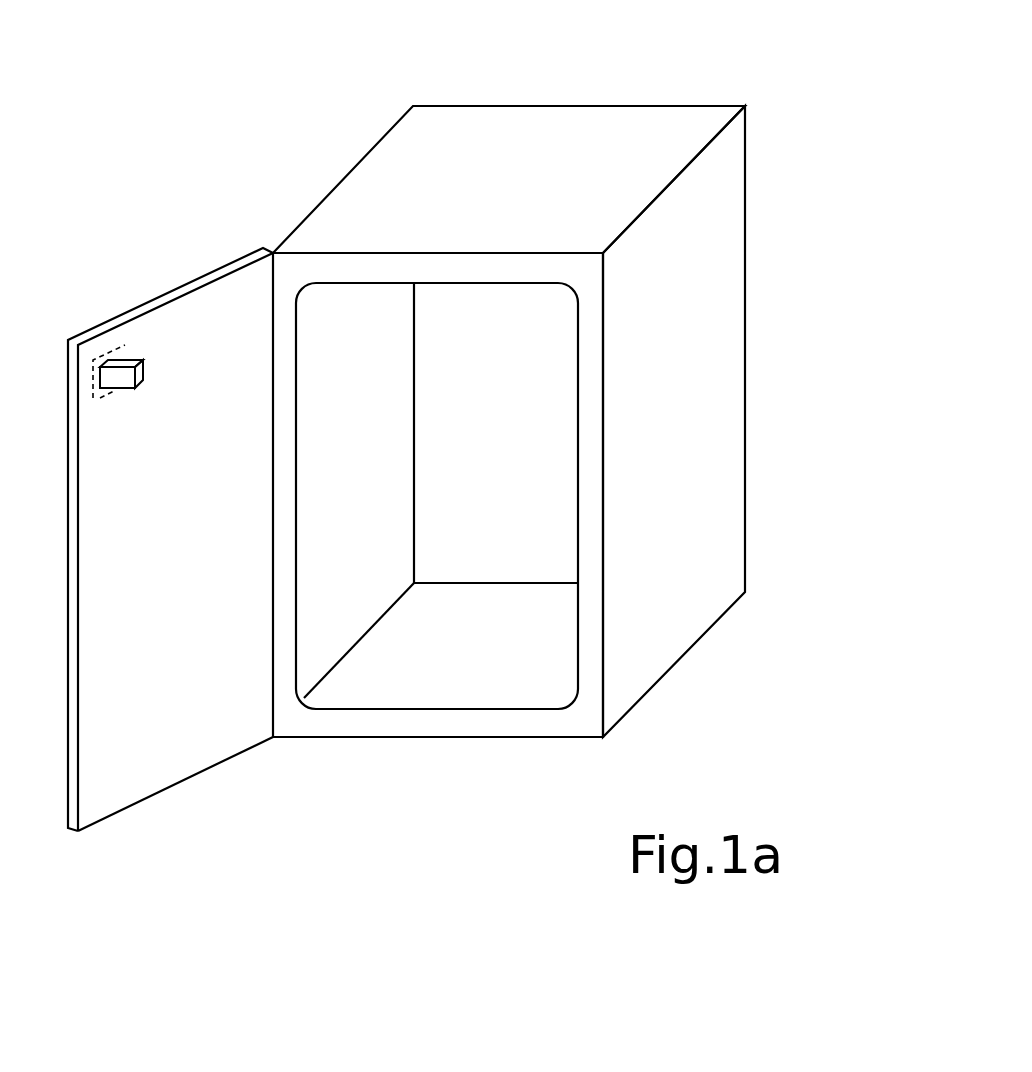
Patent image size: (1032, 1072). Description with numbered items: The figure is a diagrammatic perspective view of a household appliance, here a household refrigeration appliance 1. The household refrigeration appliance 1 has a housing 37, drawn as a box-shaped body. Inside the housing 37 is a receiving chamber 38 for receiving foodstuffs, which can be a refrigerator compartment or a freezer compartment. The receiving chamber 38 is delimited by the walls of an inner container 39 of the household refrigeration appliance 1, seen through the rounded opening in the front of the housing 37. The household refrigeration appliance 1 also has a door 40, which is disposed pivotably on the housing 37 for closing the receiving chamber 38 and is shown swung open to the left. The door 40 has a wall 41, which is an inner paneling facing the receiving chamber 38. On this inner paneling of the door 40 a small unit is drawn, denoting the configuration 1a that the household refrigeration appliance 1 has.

The household refrigeration appliance 1 is at (768, 123).
The configuration 1a is at (163, 402).
The housing 37 is at (760, 307).
The receiving chamber 38 is at (565, 457).
The inner container 39 is at (578, 537).
The door 40 is at (149, 817).
The wall 41 is at (167, 757).